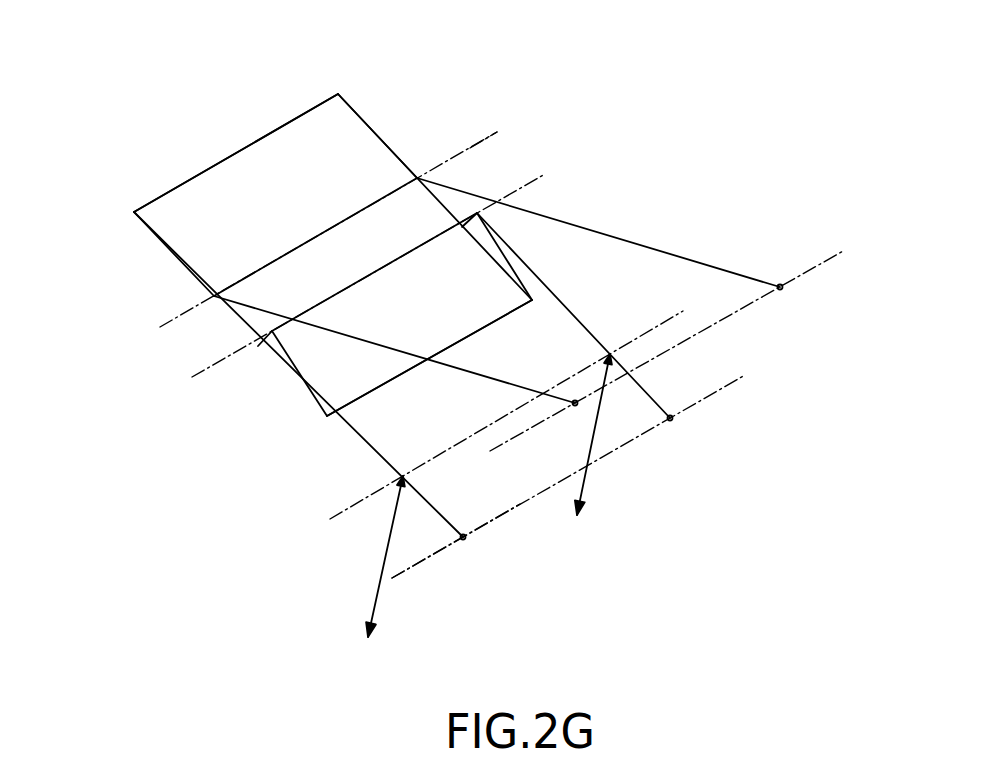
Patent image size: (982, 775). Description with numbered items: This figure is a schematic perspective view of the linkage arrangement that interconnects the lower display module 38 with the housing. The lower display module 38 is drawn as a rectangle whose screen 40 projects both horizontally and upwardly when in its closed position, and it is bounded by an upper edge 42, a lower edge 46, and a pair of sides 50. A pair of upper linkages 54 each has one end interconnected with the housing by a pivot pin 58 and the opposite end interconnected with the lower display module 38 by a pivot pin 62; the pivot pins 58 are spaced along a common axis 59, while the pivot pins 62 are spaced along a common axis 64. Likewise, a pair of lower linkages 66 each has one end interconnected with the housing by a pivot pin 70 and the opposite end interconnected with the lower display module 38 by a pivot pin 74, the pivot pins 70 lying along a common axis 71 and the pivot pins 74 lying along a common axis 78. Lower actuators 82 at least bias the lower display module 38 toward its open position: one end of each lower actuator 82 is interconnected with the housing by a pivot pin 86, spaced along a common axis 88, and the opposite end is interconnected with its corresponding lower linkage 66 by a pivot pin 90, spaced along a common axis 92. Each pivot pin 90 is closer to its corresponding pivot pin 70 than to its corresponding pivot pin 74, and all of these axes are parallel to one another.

The lower display module 38 is at (134, 212).
The screen 40 is at (298, 372).
The upper edge 42 is at (182, 186).
The lower edge 46 is at (325, 420).
The sides 50 is at (373, 130).
The upper linkage 54 is at (690, 260).
The pivot pin 58 is at (783, 289).
The common axis 59 is at (818, 263).
The pivot pin 62 is at (425, 172).
The common axis 64 is at (498, 130).
The lower linkage 66 is at (552, 296).
The pivot pin 70 is at (672, 422).
The common axis 71 is at (720, 390).
The pivot pin 74 is at (477, 213).
The common axis 78 is at (540, 178).
The lower actuator 82 is at (589, 452).
The pivot pin 86 is at (580, 517).
The common axis 88 is at (503, 515).
The pivot pin 90 is at (610, 354).
The common axis 92 is at (332, 516).